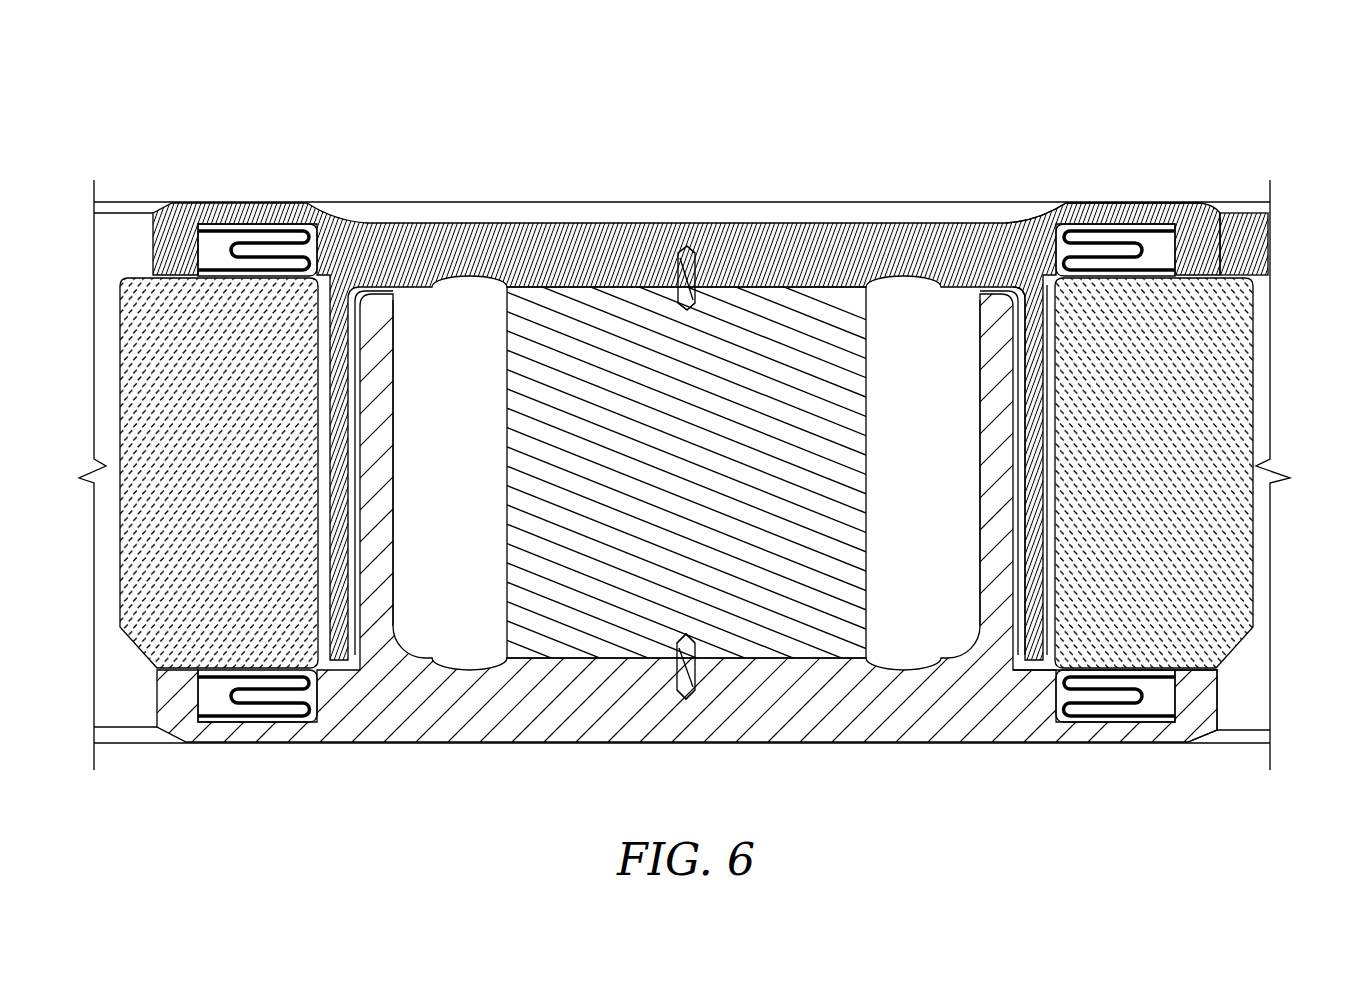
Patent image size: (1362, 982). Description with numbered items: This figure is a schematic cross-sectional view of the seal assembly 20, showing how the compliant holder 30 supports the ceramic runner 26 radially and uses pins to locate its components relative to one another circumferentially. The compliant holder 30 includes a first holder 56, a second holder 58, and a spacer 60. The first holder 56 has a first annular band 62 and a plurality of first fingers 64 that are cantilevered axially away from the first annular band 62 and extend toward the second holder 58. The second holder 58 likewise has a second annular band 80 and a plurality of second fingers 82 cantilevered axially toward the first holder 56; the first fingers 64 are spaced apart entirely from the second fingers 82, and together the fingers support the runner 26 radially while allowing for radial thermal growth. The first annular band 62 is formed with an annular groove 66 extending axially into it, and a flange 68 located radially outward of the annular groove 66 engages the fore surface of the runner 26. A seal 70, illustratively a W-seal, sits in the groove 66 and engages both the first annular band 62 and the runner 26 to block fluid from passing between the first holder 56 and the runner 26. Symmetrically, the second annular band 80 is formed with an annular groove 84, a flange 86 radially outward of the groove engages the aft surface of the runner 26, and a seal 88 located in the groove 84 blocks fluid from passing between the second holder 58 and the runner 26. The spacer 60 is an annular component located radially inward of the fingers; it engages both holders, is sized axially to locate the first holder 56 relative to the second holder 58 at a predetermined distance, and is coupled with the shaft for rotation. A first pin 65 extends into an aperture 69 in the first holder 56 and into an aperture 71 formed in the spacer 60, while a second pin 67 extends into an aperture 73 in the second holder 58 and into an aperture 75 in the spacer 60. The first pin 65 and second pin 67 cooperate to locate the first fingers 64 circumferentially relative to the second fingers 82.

The seal assembly 20 is at (112, 128).
The runner 26 is at (1215, 313).
The compliant holder 30 is at (397, 387).
The first holder 56 is at (377, 222).
The second holder 58 is at (410, 712).
The spacer 60 is at (534, 606).
The first annular band 62 is at (969, 223).
The first fingers 64 is at (1042, 493).
The first pin 65 is at (712, 247).
The annular groove 66 is at (213, 248).
The second pin 67 is at (698, 665).
The flange 68 is at (1246, 225).
The aperture 69 is at (700, 253).
The seal 70 is at (262, 222).
The aperture 71 is at (667, 305).
The aperture 73 is at (672, 693).
The aperture 75 is at (703, 642).
The second annular band 80 is at (1005, 718).
The second fingers 82 is at (972, 397).
The annular groove 84 is at (215, 699).
The flange 86 is at (1192, 690).
The seal 88 is at (267, 712).